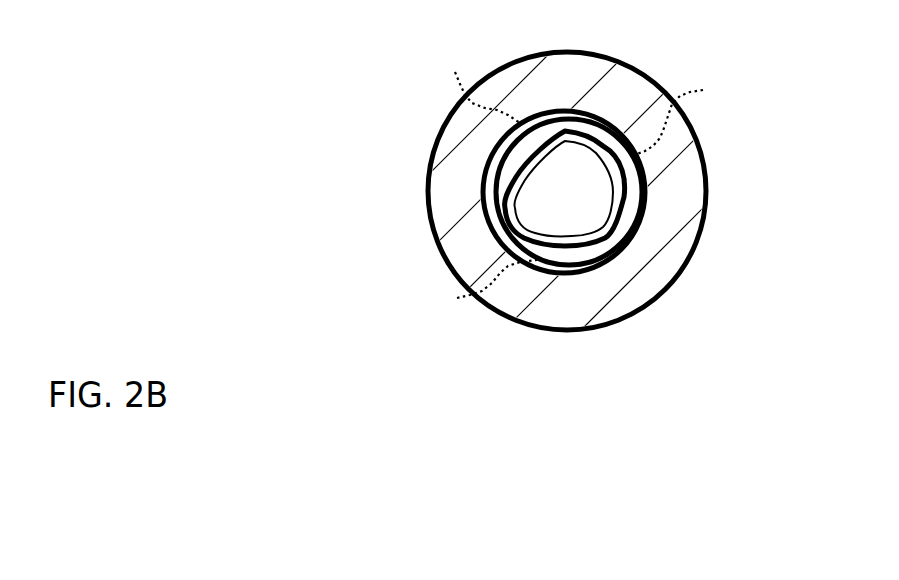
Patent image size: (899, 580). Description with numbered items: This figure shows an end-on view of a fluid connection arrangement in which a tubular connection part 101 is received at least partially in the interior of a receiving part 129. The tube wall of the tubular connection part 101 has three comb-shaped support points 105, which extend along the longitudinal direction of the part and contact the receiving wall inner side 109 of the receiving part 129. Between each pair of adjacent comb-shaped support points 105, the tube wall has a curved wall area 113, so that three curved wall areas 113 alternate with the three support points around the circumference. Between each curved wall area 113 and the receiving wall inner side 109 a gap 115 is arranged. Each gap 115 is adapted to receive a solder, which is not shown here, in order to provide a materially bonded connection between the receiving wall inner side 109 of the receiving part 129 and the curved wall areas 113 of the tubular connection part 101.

The tubular connection part 101 is at (600, 196).
The comb-shaped support point 105 is at (491, 136).
The receiving wall inner side 109 is at (628, 258).
The curved wall area 113 is at (533, 207).
The gap 115 is at (581, 177).
The receiving part 129 is at (567, 190).